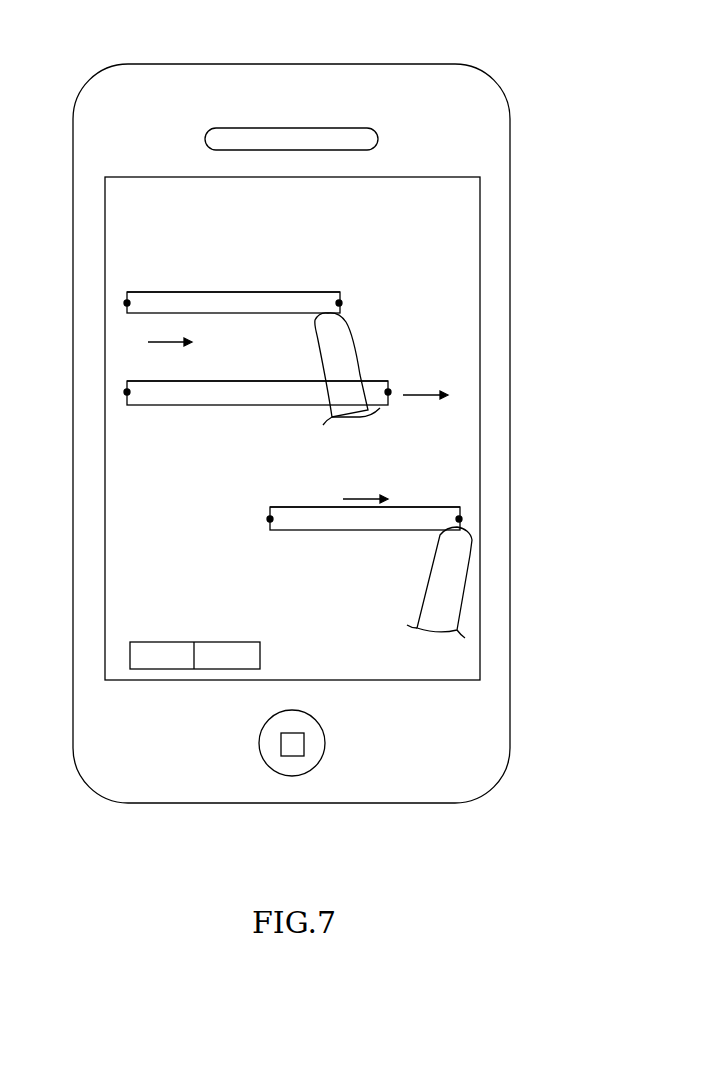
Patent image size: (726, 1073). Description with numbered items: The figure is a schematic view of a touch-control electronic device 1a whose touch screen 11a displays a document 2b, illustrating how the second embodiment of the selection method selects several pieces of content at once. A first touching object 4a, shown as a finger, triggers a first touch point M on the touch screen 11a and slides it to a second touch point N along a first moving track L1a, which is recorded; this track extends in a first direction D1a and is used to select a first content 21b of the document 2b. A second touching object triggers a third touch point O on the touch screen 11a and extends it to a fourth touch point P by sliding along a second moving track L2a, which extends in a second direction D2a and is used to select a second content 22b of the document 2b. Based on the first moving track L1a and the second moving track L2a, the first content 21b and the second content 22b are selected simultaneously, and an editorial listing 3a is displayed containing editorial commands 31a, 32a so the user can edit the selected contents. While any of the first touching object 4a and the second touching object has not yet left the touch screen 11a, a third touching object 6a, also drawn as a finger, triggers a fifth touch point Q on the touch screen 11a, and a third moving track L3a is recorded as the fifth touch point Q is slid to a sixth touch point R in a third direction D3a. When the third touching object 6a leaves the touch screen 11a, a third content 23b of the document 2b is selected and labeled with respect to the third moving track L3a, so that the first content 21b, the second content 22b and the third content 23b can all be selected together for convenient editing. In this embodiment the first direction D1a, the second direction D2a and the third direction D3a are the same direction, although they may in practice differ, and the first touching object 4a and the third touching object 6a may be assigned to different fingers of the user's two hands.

The touch-control electronic device 1a is at (511, 152).
The touch screen 11a is at (480, 224).
The document 2b is at (163, 215).
The first content 21b is at (223, 313).
The second content 22b is at (388, 405).
The third content 23b is at (318, 507).
The first moving track L1a is at (127, 292).
The second moving track L2a is at (265, 381).
The third moving track L3a is at (440, 507).
The first touch point M is at (127, 303).
The second touch point N is at (339, 303).
The third touch point O is at (127, 392).
The fourth touch point P is at (388, 392).
The fifth touch point Q is at (270, 507).
The sixth touch point R is at (459, 519).
The first direction D1a is at (170, 333).
The second direction D2a is at (425, 386).
The third direction D3a is at (365, 491).
The first touching object 4a is at (347, 365).
The third touching object 6a is at (460, 568).
The editorial listing 3a is at (196, 765).
The editorial command 31a is at (157, 669).
The editorial command 32a is at (243, 669).